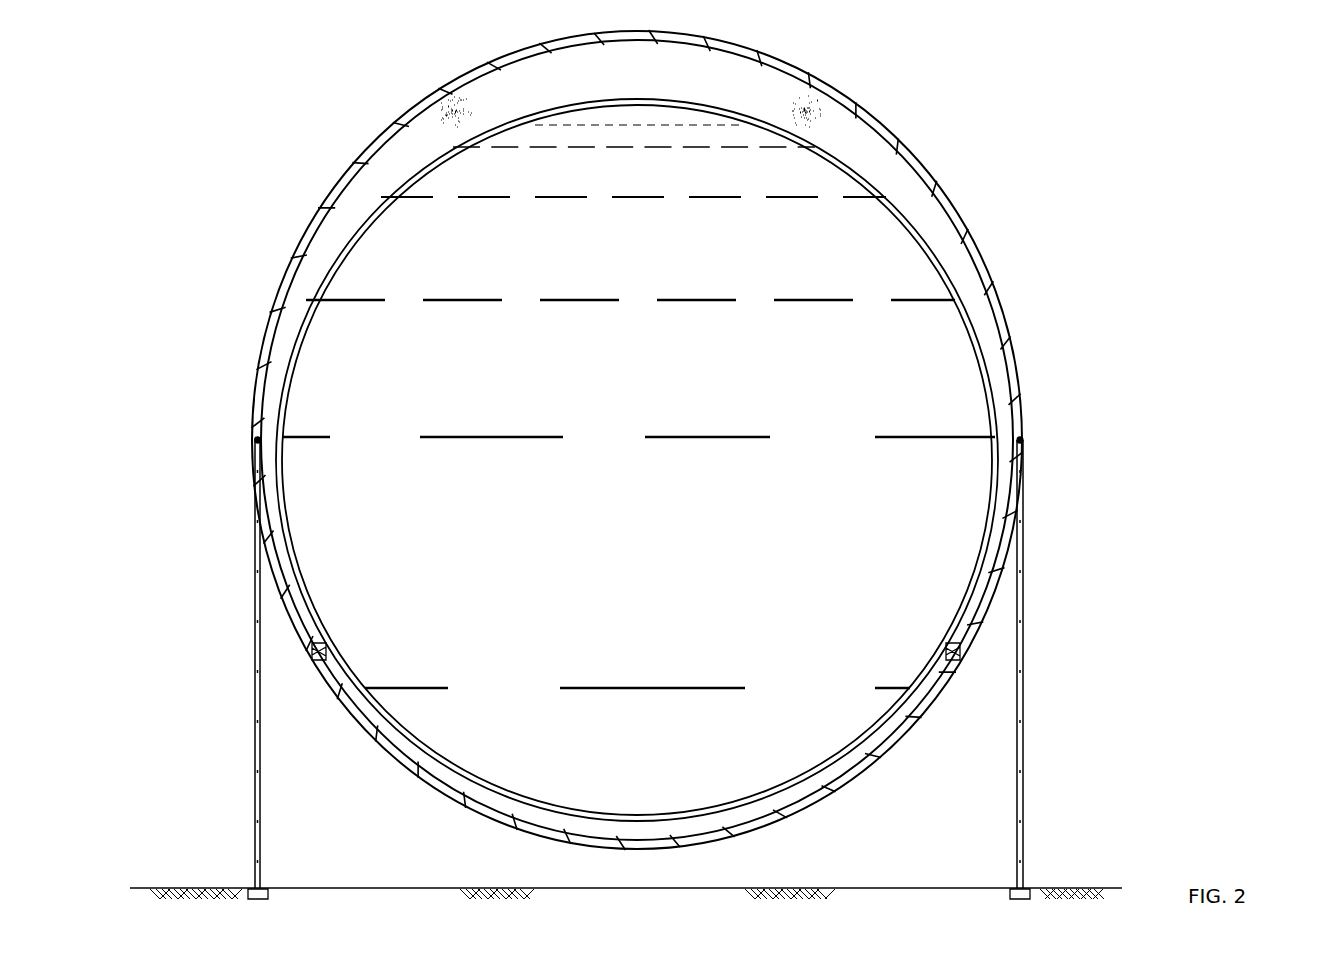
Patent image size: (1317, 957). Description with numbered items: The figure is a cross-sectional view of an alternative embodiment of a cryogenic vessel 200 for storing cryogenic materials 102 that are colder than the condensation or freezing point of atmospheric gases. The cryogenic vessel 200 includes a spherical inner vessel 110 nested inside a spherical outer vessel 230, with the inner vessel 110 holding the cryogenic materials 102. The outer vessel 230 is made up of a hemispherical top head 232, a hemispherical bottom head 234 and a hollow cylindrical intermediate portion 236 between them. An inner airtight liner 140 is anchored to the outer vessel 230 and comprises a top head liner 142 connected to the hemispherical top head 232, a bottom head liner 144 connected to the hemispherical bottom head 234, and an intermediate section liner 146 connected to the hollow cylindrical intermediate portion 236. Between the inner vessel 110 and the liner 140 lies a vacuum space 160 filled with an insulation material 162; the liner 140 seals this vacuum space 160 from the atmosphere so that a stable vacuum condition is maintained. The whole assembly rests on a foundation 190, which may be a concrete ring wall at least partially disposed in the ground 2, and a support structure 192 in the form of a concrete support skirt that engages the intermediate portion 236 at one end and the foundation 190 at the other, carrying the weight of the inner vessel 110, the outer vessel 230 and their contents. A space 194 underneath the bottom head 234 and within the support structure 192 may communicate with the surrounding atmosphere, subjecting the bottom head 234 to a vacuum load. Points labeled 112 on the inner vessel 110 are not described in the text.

The cryogenic vessel 200 is at (311, 90).
The outer vessel 230 is at (843, 68).
The hemispherical top head 232 is at (778, 62).
The hemispherical bottom head 234 is at (870, 768).
The hollow cylindrical intermediate portion 236 is at (1028, 437).
The inner vessel 110 is at (858, 162).
The ring attachment point 112 is at (268, 440).
The liner 140 is at (947, 188).
The top head liner 142 is at (928, 187).
The bottom head liner 144 is at (805, 800).
The intermediate section liner 146 is at (1005, 463).
The vacuum space 160 is at (529, 85).
The insulation material 162 is at (447, 101).
The cryogenic materials 102 is at (908, 264).
The foundation 190 is at (1028, 888).
The support structure 192 is at (1025, 774).
The space 194 is at (296, 812).
The ground 2 is at (152, 888).